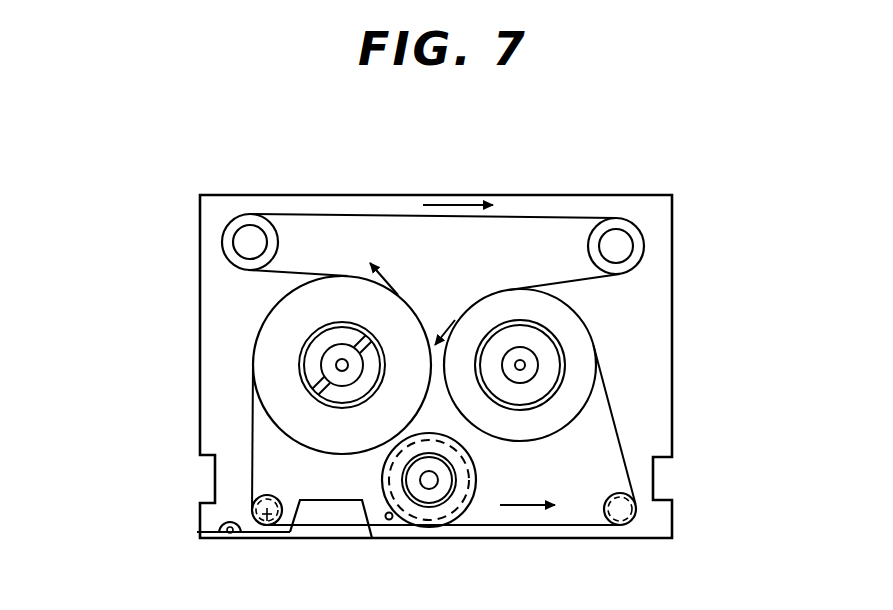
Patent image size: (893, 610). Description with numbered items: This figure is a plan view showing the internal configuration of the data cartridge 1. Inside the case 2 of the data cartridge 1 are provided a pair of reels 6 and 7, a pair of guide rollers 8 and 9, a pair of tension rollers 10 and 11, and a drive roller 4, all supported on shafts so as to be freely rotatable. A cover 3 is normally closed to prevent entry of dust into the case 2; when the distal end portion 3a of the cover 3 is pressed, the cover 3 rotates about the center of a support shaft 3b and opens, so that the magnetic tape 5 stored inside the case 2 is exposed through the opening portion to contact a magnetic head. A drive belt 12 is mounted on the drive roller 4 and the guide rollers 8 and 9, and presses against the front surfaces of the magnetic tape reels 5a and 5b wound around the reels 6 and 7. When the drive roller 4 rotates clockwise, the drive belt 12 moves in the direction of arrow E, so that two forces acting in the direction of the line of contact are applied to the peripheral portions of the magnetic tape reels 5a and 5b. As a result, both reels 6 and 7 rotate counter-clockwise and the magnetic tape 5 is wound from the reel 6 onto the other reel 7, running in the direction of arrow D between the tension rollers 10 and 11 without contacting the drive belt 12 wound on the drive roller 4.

The data cartridge 1 is at (539, 153).
The case 2 is at (627, 194).
The cover 3 is at (353, 533).
The distal end portion 3a is at (205, 535).
The support shaft 3b is at (236, 536).
The drive roller 4 is at (475, 500).
The magnetic tape 5 is at (552, 527).
The magnetic tape reel 5a is at (352, 293).
The magnetic tape reel 5b is at (515, 303).
The reel 6 is at (317, 360).
The reel 7 is at (543, 355).
The guide roller 8 is at (242, 243).
The guide roller 9 is at (621, 248).
The tension roller 10 is at (273, 528).
The tension roller 11 is at (622, 523).
The drive belt 12 is at (443, 220).